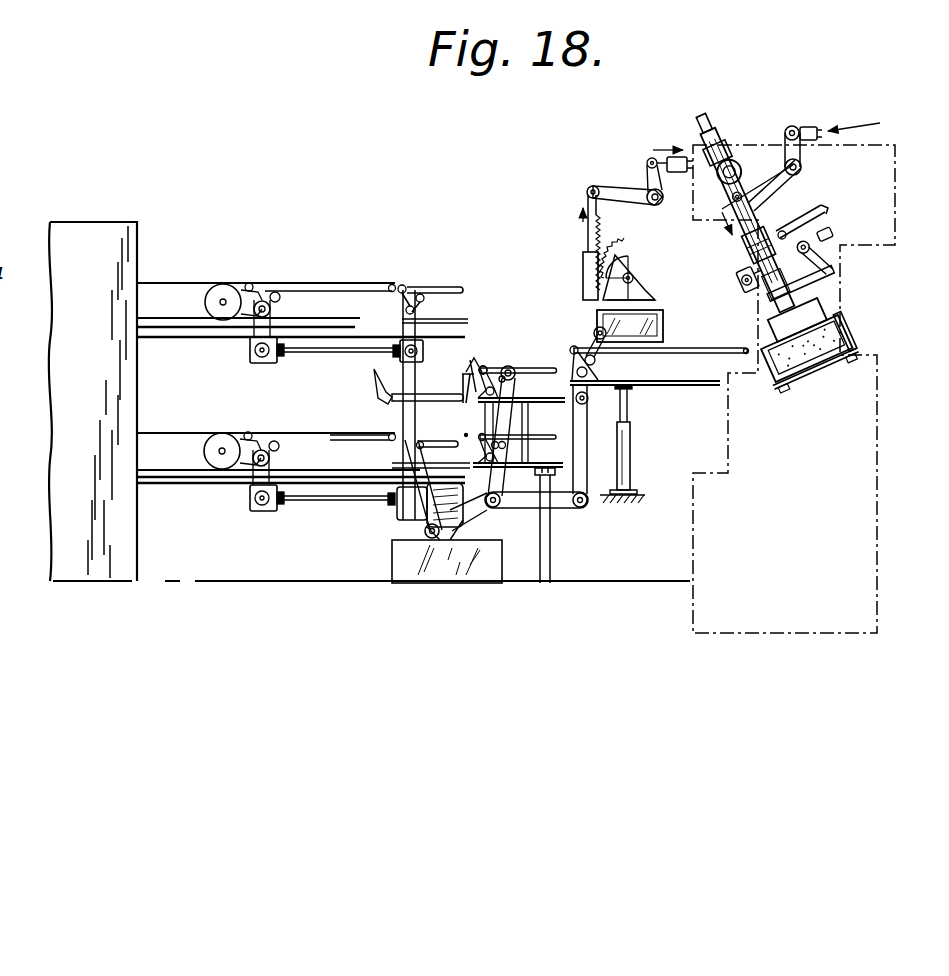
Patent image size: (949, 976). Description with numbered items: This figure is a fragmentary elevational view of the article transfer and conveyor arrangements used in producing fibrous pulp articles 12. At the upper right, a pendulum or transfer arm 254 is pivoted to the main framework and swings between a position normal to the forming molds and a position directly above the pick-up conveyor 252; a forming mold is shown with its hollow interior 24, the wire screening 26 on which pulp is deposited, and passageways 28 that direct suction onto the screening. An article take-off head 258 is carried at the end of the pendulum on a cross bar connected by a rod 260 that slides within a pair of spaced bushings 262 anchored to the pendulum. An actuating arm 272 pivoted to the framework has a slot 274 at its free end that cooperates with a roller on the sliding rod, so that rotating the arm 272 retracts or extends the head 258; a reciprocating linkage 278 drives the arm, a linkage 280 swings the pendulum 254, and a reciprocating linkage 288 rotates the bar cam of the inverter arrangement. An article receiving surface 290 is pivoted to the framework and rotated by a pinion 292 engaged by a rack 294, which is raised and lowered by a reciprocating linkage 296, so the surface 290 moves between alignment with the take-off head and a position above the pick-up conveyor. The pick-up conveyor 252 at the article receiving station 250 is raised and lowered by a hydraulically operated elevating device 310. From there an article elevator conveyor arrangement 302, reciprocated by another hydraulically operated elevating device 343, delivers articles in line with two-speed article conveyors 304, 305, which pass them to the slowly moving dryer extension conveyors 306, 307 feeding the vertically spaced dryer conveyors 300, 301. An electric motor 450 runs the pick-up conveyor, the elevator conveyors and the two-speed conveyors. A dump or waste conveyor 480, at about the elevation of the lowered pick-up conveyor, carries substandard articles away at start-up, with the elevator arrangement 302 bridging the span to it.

The dryer conveyor 300 is at (192, 282).
The dryer extension conveyor 306 is at (337, 281).
The two-speed article conveyor 304 is at (451, 282).
The dryer conveyor 301 is at (190, 433).
The dryer extension conveyor 307 is at (362, 418).
The dump or waste conveyor 480 is at (434, 393).
The two-speed article conveyor 305 is at (440, 431).
The article elevator conveyor arrangement 302 is at (506, 364).
The electric motor 450 is at (440, 499).
The hydraulically operated elevating device 343 is at (544, 527).
The hydraulically operated elevating device 310 is at (625, 451).
The pick-up conveyor 252 is at (718, 355).
The article receiving station 250 is at (756, 326).
The fibrous pulp article 12 is at (655, 330).
The article receiving surface 290 is at (652, 318).
The pinion 292 is at (628, 263).
The bushings 262 is at (750, 136).
The rod 260 is at (746, 240).
The rack 294 is at (601, 215).
The pendulum or transfer arm 254 is at (727, 222).
The slot 274 is at (738, 201).
The actuating arm 272 is at (770, 183).
The reciprocating linkage 296 is at (627, 193).
The reciprocating linkage 278 is at (780, 152).
The linkage 280 is at (820, 207).
The reciprocating linkage 288 is at (820, 273).
The article take-off head 258 is at (812, 320).
The passageways 28 is at (823, 362).
The hollow interior 24 is at (786, 376).
The wire screening 26 is at (775, 368).